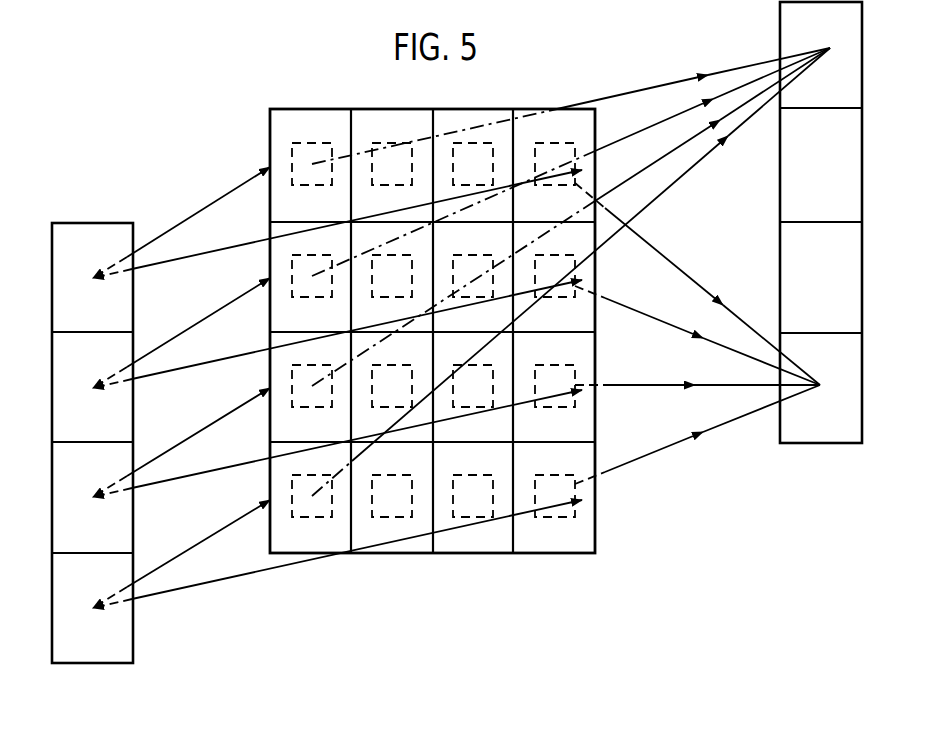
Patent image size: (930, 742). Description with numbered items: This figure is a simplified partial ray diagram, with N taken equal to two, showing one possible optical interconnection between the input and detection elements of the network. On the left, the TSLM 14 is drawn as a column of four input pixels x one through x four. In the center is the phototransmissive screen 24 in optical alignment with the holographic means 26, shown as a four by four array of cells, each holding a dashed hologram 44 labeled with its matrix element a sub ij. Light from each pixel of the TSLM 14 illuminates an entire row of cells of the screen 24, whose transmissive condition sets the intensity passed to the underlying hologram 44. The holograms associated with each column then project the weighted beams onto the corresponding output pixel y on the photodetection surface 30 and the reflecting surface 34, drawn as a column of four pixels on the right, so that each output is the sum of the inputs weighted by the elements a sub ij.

The TSLM 14 is at (133, 643).
The phototransmissive screen 24 is at (466, 555).
The holographic means 26 is at (539, 519).
The holograms 44 is at (376, 143).
The photodetection surface 30 is at (827, 250).
The reflecting surface 34 is at (825, 445).